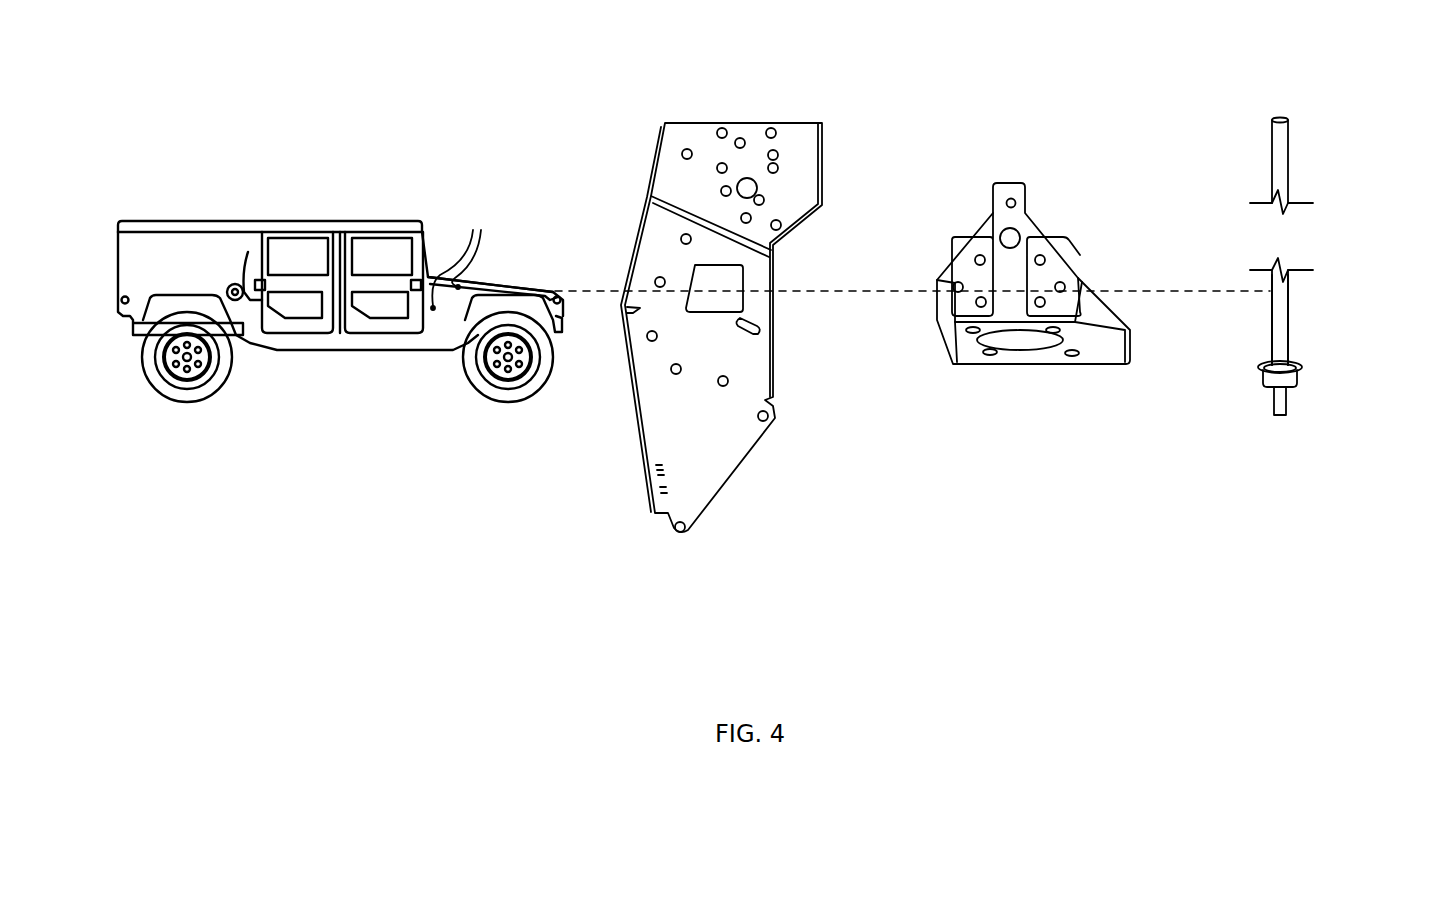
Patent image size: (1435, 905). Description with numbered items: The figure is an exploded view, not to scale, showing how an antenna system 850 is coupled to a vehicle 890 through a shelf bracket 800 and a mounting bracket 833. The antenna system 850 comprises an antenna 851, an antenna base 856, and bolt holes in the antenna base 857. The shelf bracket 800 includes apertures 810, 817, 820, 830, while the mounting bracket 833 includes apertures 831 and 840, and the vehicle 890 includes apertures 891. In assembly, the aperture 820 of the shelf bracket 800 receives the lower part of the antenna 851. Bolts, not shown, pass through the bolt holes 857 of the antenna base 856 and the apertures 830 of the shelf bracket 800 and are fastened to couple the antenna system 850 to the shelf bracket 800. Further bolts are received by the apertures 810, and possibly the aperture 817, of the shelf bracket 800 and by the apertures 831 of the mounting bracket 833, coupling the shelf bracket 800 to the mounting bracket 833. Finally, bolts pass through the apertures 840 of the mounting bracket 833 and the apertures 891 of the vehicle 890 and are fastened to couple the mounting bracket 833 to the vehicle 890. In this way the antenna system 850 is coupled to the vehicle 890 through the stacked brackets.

The shelf bracket 800 is at (1072, 443).
The apertures 810 is at (975, 258).
The aperture 817 is at (1014, 236).
The aperture 820 is at (1020, 343).
The apertures 830 is at (983, 351).
The apertures 831 is at (721, 191).
The mounting bracket 833 is at (786, 103).
The apertures 840 is at (768, 416).
The antenna system 850 is at (1333, 133).
The antenna 851 is at (1290, 302).
The antenna base 856 is at (1300, 377).
The bolt holes in the antenna base 857 is at (1263, 363).
The vehicle 890 is at (317, 396).
The apertures 891 is at (467, 255).